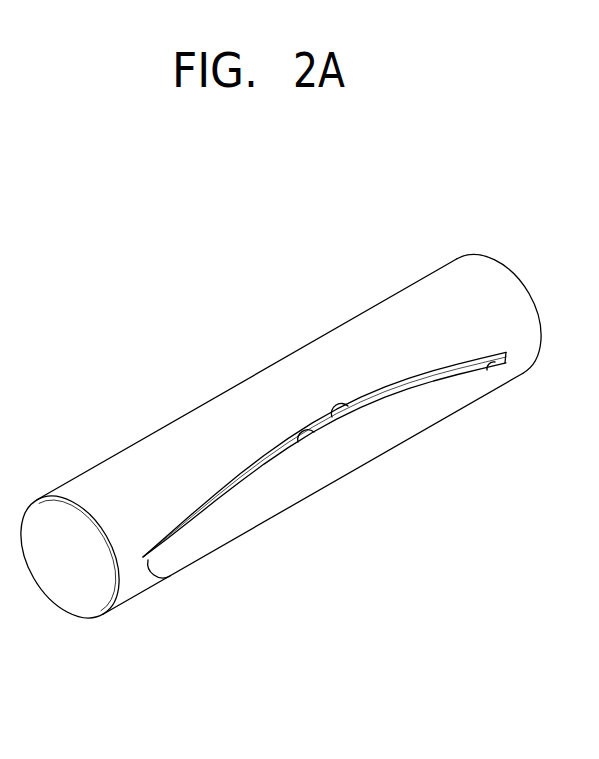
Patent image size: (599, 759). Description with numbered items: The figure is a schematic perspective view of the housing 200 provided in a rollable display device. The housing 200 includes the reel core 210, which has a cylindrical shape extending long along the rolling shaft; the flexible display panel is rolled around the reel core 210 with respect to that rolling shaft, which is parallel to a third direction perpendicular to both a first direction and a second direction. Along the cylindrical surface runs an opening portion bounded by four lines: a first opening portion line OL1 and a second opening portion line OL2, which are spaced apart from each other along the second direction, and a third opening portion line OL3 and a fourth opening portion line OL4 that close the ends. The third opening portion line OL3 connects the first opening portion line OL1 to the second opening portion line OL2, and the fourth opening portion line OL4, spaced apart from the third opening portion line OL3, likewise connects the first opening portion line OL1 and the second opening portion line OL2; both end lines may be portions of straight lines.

The housing 200 is at (132, 336).
The reel core 210 is at (407, 379).
The first opening portion line OL1 is at (315, 434).
The second opening portion line OL2 is at (347, 406).
The third opening portion line OL3 is at (162, 566).
The fourth opening portion line OL4 is at (494, 364).